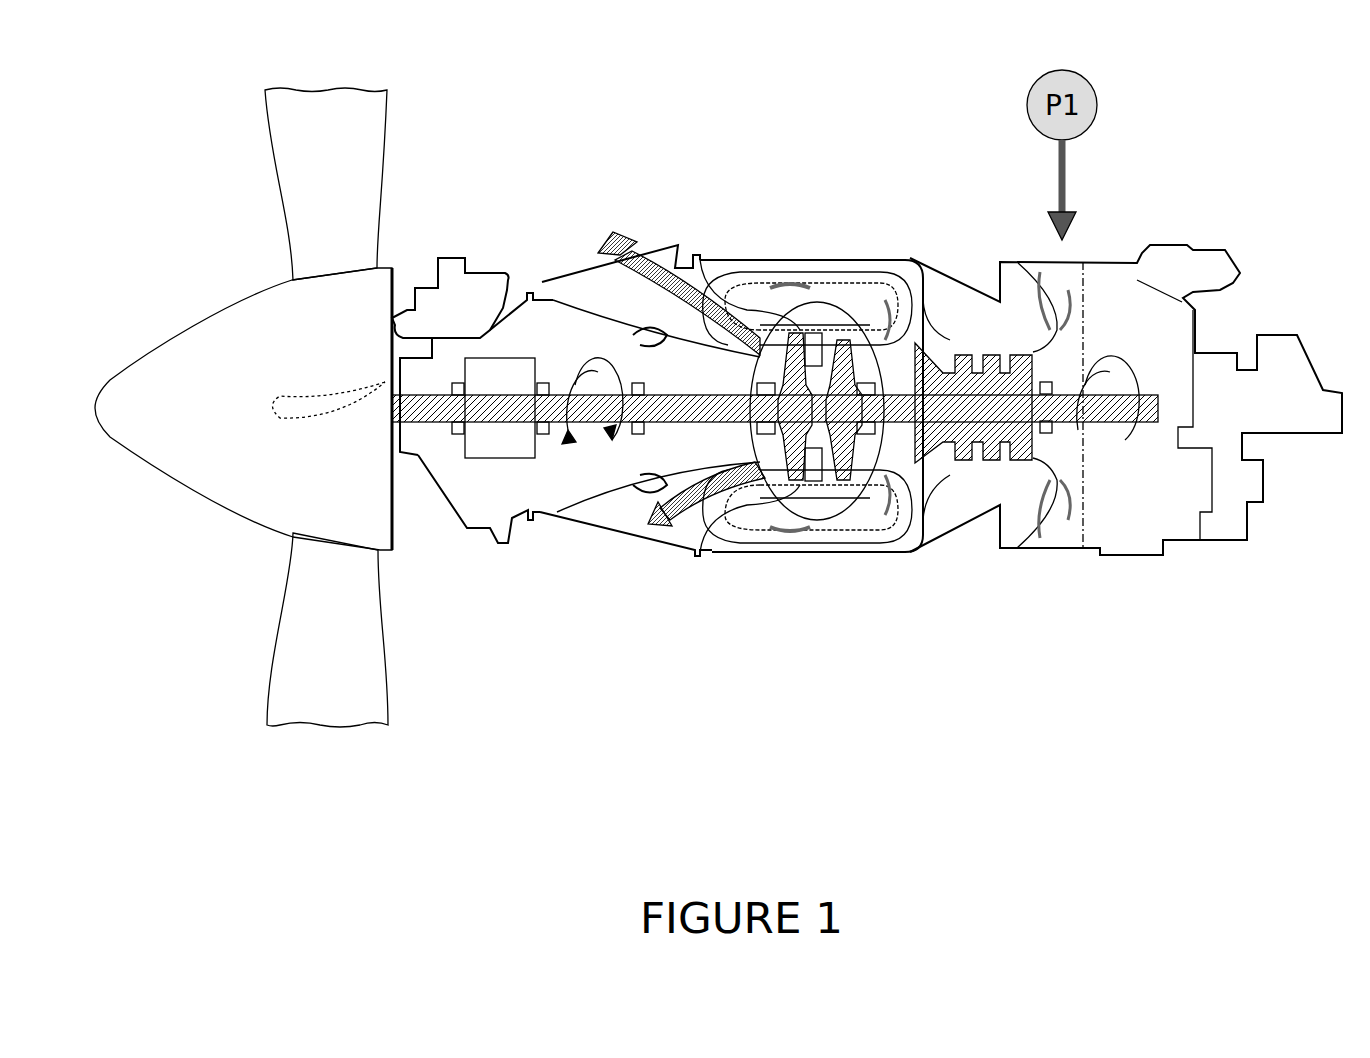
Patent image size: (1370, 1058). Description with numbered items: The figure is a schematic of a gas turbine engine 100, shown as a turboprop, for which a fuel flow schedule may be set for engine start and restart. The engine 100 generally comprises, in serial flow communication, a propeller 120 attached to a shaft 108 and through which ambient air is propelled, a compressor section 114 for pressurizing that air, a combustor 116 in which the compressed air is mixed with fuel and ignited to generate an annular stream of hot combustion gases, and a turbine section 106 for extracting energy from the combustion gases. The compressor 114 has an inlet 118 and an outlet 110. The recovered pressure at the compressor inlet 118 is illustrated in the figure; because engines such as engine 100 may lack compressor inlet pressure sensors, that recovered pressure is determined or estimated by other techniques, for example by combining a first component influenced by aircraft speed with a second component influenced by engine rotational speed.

The gas turbine engine 100 is at (560, 119).
The turbine section 106 is at (690, 452).
The shaft 108 is at (418, 455).
The outlet 110 is at (872, 262).
The compressor section 114 is at (960, 472).
The combustor 116 is at (840, 300).
The inlet 118 is at (1045, 262).
The propeller 120 is at (236, 275).